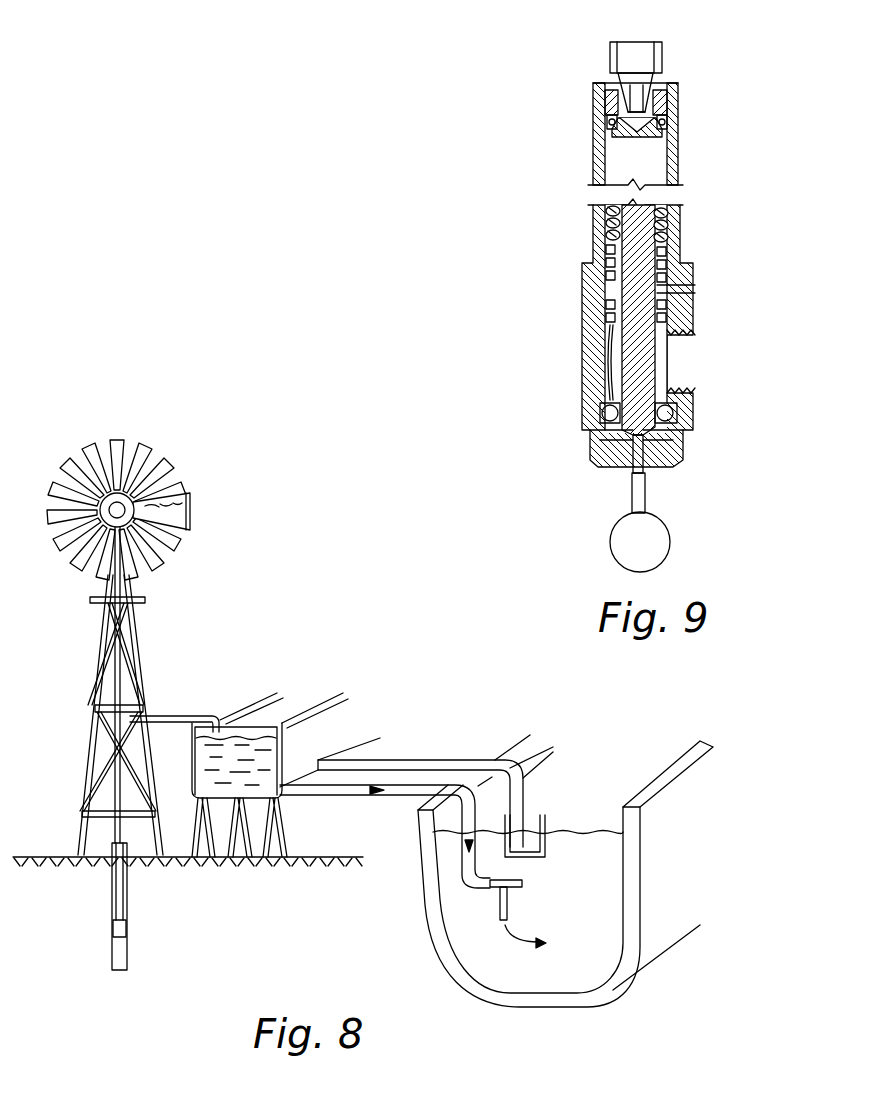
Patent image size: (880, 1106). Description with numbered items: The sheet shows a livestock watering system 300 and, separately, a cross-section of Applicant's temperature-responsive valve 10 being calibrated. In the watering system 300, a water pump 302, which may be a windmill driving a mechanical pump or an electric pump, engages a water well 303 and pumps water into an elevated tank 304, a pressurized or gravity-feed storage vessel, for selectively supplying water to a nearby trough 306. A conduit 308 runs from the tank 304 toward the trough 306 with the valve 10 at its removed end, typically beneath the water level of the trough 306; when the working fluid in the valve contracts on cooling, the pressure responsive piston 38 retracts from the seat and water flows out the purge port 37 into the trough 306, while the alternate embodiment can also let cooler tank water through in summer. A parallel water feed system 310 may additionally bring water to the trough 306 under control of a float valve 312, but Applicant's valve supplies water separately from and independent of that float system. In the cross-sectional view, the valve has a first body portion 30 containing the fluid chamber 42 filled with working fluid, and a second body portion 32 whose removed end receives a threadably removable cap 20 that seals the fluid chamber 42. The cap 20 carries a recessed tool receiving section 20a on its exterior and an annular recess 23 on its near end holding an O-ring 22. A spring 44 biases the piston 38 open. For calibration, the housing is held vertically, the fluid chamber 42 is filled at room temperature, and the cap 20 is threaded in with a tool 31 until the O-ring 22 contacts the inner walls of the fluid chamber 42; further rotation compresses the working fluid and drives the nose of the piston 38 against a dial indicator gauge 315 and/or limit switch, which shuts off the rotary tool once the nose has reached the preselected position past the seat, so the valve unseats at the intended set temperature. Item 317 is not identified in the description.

In FIG. 9, the adjustment handle 317 is at (596, 65).
In FIG. 9, the recessed tool receiving section 20a is at (650, 88).
In FIG. 9, the threadably removable cap 20 is at (666, 103).
In FIG. 9, the O-ring 22 is at (606, 125).
In FIG. 9, the annular recess 23 is at (639, 133).
In FIG. 9, the fluid chamber 42 is at (656, 130).
In FIG. 9, the second body portion 32 is at (698, 153).
In FIG. 9, the spring 44 is at (609, 219).
In FIG. 9, the valve 10 is at (548, 340).
In FIG. 8, the valve 10 is at (484, 901).
In FIG. 9, the tool 31 is at (603, 385).
In FIG. 9, the pressure responsive piston 38 is at (656, 428).
In FIG. 9, the dial indicator gauge 315 is at (597, 543).
In FIG. 8, the livestock watering system 300 is at (369, 555).
In FIG. 8, the water pump 302 is at (137, 662).
In FIG. 8, the water well 303 is at (147, 916).
In FIG. 8, the tank 304 is at (239, 775).
In FIG. 8, the conduit 308 is at (378, 800).
In FIG. 8, the parallel water feed system 310 is at (400, 753).
In FIG. 8, the trough 306 is at (708, 740).
In FIG. 8, the float valve 312 is at (530, 817).
In FIG. 8, the first body portion 30 is at (516, 880).
In FIG. 8, the purge port 37 is at (510, 910).